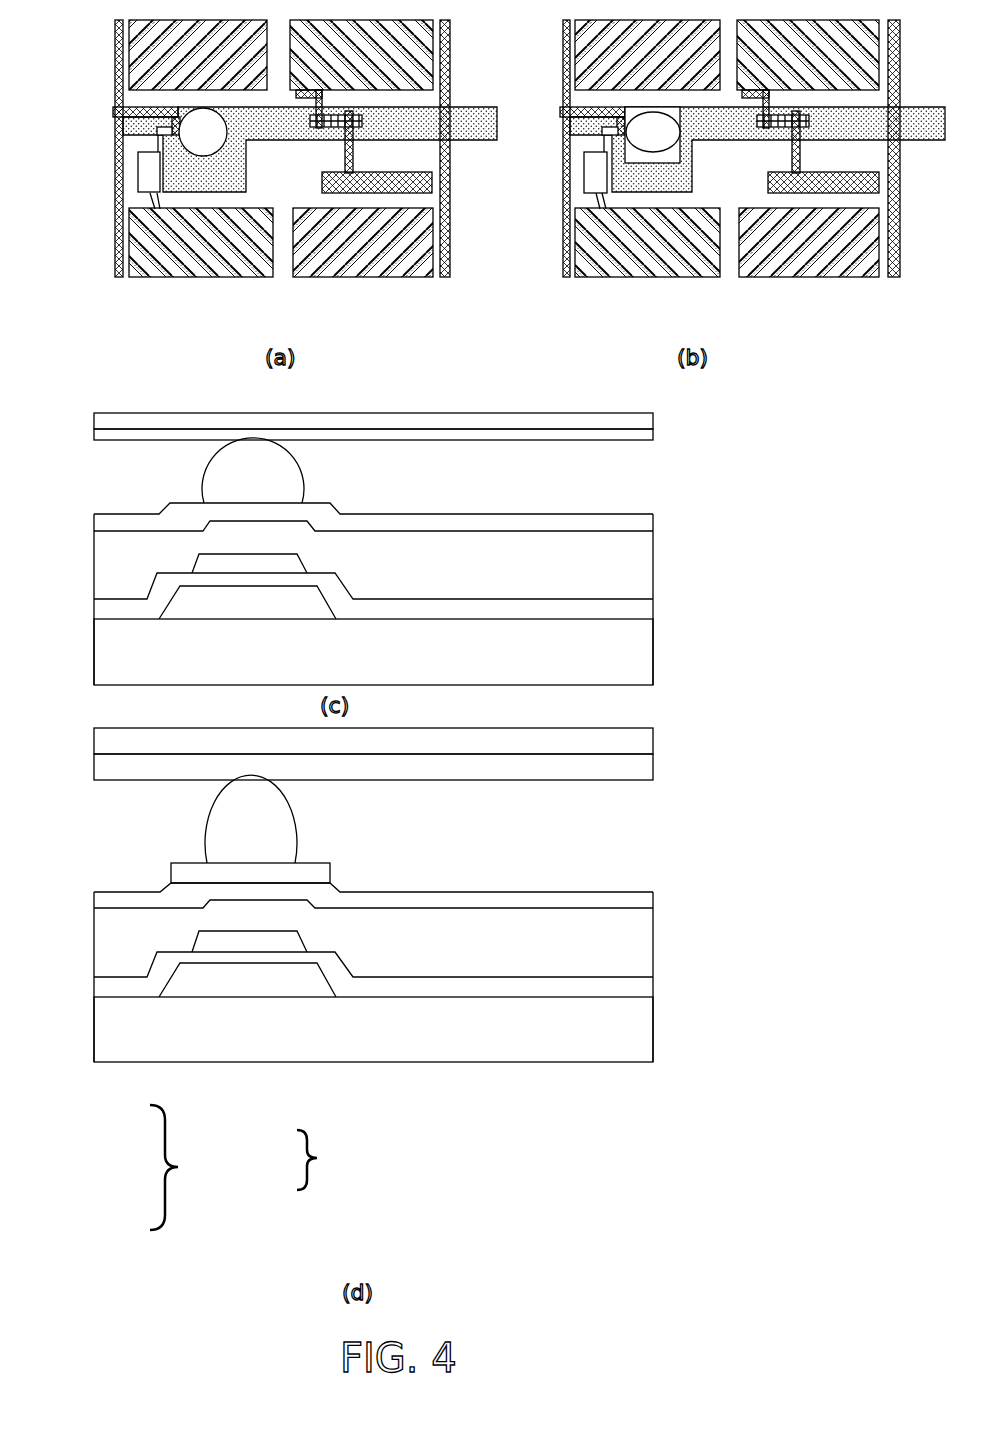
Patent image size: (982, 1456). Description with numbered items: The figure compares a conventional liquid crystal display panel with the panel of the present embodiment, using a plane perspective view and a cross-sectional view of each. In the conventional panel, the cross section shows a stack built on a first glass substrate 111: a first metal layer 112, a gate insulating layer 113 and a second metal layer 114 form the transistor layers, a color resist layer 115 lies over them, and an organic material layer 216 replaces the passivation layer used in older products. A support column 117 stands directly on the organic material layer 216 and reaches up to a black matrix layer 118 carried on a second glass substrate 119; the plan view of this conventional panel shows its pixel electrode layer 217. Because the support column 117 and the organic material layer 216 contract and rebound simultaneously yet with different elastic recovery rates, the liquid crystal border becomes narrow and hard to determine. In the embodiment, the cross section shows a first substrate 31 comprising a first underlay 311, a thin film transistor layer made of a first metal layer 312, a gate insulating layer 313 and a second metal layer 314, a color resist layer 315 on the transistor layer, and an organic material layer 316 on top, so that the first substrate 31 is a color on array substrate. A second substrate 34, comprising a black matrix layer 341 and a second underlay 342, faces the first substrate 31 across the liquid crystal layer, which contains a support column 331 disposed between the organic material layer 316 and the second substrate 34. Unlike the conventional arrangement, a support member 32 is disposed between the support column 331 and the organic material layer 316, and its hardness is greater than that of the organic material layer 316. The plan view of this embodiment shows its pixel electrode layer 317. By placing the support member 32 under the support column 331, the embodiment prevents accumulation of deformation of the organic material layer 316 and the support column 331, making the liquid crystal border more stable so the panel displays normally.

The first glass substrate 111 is at (633, 653).
The first metal layer 112 is at (147, 127).
The gate insulating layer 113 is at (640, 605).
The second metal layer 114 is at (123, 262).
The color resist layer 115 is at (633, 567).
The support column 117 is at (197, 145).
The black matrix layer 118 is at (640, 436).
The second glass substrate 119 is at (638, 422).
The organic material layer 216 is at (633, 525).
The pixel electrode layer 217 is at (188, 273).
The first underlay 311 is at (592, 125).
The first metal layer 312 is at (185, 983).
The gate insulating layer 313 is at (640, 984).
The second metal layer 314 is at (565, 265).
The color resist layer 315 is at (633, 946).
The organic material layer 316 is at (633, 902).
The pixel electrode layer 317 is at (635, 158).
The first substrate 31 is at (181, 1167).
The support member 32 is at (190, 872).
The support column 331 is at (645, 143).
The second substrate 34 is at (322, 1160).
The black matrix layer 341 is at (640, 775).
The second underlay 342 is at (638, 742).